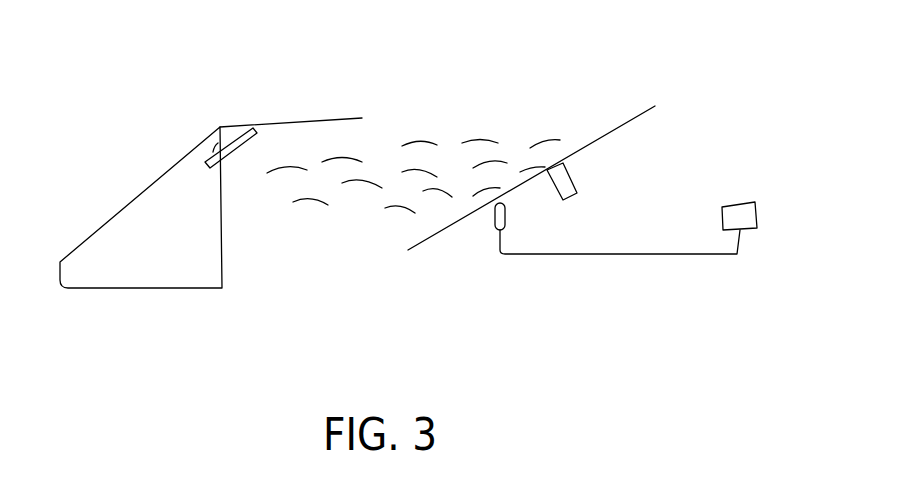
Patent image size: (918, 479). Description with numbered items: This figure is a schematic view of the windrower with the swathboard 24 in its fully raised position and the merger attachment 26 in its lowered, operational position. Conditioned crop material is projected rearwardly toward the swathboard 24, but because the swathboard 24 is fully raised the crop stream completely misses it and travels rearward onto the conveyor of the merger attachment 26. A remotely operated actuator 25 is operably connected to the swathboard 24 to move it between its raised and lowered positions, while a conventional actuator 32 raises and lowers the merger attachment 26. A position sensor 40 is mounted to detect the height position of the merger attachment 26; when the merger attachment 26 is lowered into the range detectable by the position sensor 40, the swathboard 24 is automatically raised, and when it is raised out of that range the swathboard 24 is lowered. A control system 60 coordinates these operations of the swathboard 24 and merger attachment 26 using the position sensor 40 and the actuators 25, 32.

The swathboard 24 is at (293, 124).
The actuator 25 is at (239, 147).
The merger attachment 26 is at (617, 127).
The actuator 32 is at (568, 175).
The position sensor 40 is at (490, 218).
The control system 60 is at (722, 220).